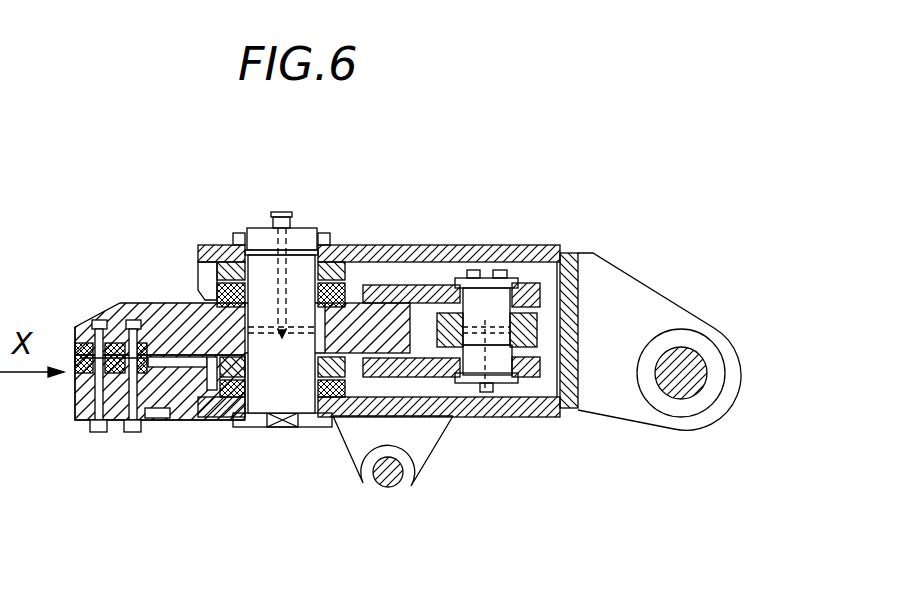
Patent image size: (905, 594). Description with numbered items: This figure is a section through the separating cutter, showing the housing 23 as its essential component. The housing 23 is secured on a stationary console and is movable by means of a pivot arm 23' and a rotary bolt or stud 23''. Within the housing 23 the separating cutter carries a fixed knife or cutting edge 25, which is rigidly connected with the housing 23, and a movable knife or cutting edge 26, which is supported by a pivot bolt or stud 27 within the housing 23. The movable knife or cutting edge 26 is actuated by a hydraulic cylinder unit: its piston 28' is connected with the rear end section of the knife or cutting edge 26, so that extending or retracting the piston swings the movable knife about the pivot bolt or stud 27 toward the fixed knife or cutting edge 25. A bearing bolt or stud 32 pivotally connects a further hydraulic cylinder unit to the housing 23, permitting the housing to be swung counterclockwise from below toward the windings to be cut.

The housing 23 is at (388, 298).
The pivot arm 23' is at (659, 326).
The rotary bolt or stud 23'' is at (668, 421).
The knife or cutting edge 25 is at (180, 413).
The movable knife or cutting edge 26 is at (160, 318).
The pivot bolt or stud 27 is at (266, 390).
The piston 28' is at (523, 284).
The bearing bolt or stud 32 is at (378, 480).